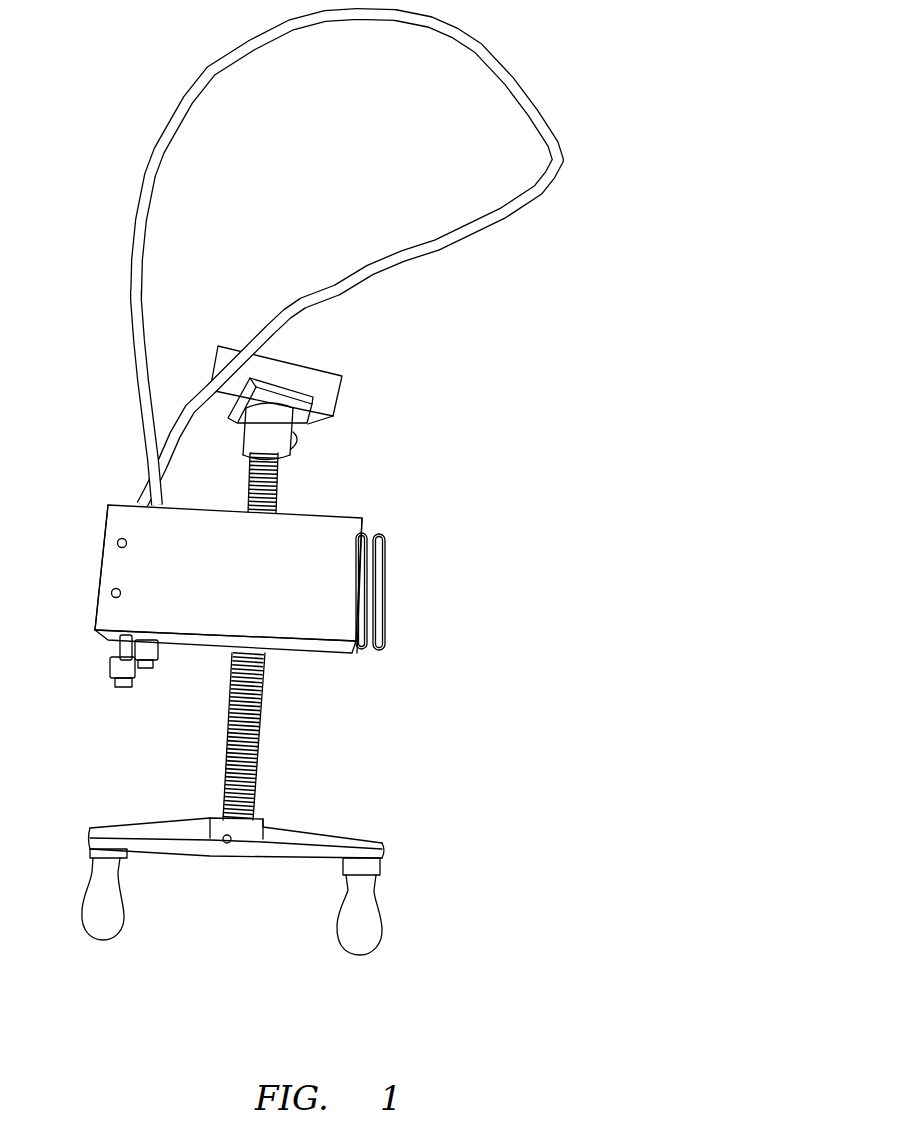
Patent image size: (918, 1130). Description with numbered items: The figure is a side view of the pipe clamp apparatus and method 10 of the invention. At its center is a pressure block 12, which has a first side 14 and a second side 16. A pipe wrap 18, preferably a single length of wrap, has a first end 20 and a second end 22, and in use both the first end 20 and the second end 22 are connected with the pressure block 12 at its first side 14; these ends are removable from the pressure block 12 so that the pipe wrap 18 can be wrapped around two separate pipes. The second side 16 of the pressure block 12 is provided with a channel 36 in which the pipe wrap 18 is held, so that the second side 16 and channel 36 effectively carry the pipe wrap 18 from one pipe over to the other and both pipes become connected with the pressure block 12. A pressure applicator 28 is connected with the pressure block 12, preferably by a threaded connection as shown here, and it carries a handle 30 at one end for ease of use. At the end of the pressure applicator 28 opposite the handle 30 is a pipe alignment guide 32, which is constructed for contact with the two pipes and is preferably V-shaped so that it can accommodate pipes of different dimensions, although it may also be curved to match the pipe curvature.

The pipe clamp apparatus and method 10 is at (319, 484).
The pressure block 12 is at (208, 562).
The first side 14 is at (105, 519).
The second side 16 is at (383, 534).
The pipe wrap 18 is at (512, 72).
The first end 20 is at (110, 672).
The second end 22 is at (158, 655).
The pressure applicator 28 is at (266, 742).
The handle 30 is at (303, 827).
The pipe alignment guide 32 is at (312, 370).
The channel 36 is at (384, 586).